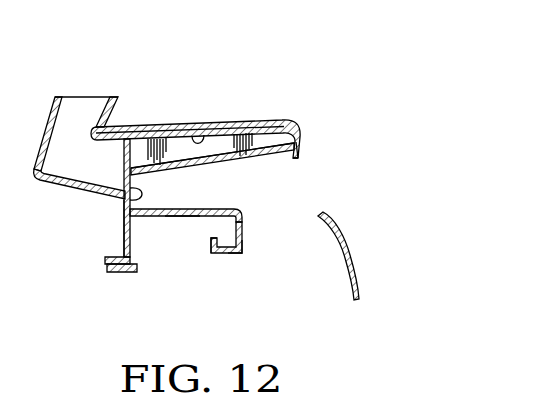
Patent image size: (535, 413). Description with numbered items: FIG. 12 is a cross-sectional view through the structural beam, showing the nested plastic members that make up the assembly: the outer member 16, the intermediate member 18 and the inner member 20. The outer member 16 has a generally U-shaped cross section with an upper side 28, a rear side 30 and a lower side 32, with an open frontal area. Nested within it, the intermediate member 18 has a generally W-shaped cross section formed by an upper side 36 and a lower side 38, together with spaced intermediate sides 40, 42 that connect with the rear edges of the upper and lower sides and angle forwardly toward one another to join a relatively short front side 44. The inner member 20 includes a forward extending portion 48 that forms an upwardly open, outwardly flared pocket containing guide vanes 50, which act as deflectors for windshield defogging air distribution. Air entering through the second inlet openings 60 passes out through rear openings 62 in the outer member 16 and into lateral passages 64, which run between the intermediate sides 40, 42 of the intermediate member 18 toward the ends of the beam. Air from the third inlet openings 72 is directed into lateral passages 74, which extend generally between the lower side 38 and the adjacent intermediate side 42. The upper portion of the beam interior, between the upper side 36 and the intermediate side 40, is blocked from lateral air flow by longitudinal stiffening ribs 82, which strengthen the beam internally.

The outer member 16 is at (275, 120).
The intermediate member 18 is at (257, 157).
The inner member 20 is at (124, 233).
The upper side 28 is at (165, 127).
The rear side 30 is at (337, 230).
The lower side 32 is at (125, 272).
The upper side 36 is at (208, 138).
The lower side 38 is at (213, 236).
The intermediate side 40 is at (218, 167).
The intermediate side 42 is at (155, 209).
The front side 44 is at (128, 197).
The forward extending portion 48 is at (70, 185).
The guide vanes 50 is at (83, 107).
The second inlet openings 60 is at (246, 248).
The rear openings 62 is at (295, 158).
The lateral passages 64 is at (204, 205).
The third inlet openings 72 is at (140, 263).
The lateral passages 74 is at (226, 227).
The longitudinal stiffening ribs 82 is at (124, 153).